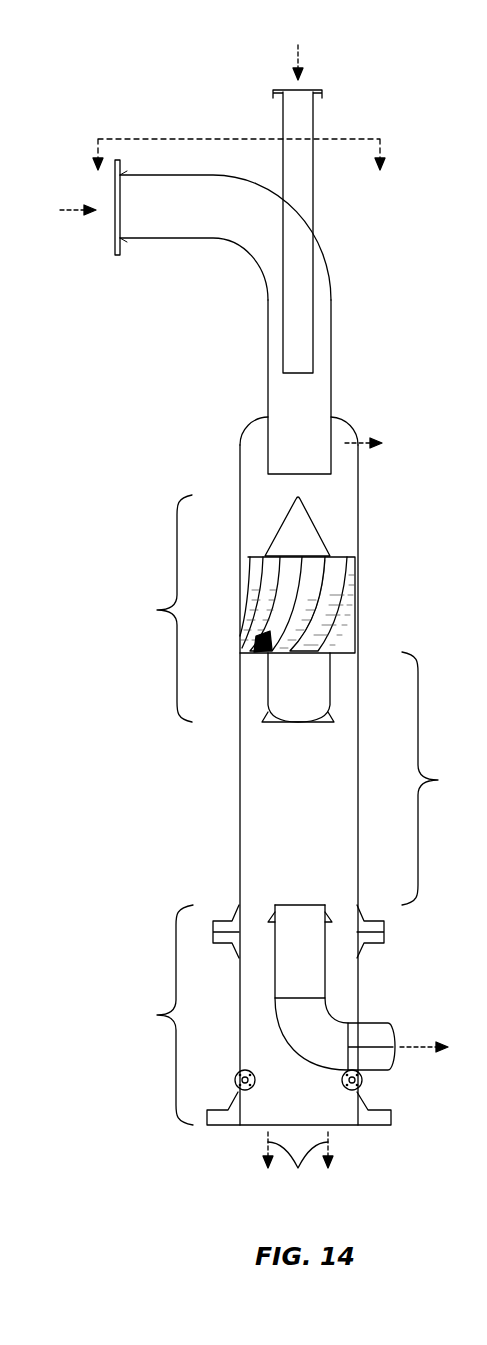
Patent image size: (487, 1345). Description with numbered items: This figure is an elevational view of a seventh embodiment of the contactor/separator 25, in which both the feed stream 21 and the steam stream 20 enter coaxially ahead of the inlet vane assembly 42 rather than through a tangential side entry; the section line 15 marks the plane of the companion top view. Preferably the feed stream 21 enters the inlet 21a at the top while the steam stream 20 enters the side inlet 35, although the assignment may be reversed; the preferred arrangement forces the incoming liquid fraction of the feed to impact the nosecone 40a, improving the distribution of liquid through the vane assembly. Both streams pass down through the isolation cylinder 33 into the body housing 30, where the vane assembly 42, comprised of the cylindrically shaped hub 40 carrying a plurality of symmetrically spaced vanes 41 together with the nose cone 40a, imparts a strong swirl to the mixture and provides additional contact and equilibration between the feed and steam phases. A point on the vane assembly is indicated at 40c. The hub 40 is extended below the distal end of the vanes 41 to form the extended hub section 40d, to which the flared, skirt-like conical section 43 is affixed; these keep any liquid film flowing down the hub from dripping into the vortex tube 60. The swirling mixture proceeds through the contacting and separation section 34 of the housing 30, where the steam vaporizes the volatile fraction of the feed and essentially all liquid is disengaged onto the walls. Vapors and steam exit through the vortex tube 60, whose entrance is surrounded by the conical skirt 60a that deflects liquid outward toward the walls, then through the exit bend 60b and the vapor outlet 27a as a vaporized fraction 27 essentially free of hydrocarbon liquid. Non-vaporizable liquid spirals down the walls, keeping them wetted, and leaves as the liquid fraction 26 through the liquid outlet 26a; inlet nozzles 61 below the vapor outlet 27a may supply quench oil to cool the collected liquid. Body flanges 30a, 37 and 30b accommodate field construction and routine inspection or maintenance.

The contactor/separator 25 is at (130, 62).
The two-phase hot feed 21 is at (300, 58).
The feed inlet 21a is at (315, 118).
The section line for top view 15 is at (246, 172).
The steam stream 20 is at (70, 210).
The steam inlet 35 is at (148, 175).
The isolation cylinder 33 is at (333, 378).
The body flange 30a is at (357, 425).
The body housing 30 is at (360, 497).
The nose cone 40a is at (322, 533).
The hub 40 is at (310, 585).
The vane 41 is at (340, 600).
The vane assembly 42 is at (160, 608).
The vane assembly edge 40c is at (255, 650).
The extended hub section 40d is at (331, 680).
The flared conical section 43 is at (335, 712).
The contacting and separation section 34 is at (439, 778).
The conical skirt 60a is at (270, 918).
The body flange 37 is at (372, 948).
The vortex tube 60 is at (325, 970).
The exit bend 60b is at (275, 1012).
The vapor outlet 27a is at (383, 1035).
The vaporized fraction 27 is at (425, 1036).
The liquid outlet 26a is at (243, 1110).
The inlet nozzle 61 is at (365, 1085).
The body flange 30b is at (392, 1125).
The liquid fraction 26 is at (298, 1169).